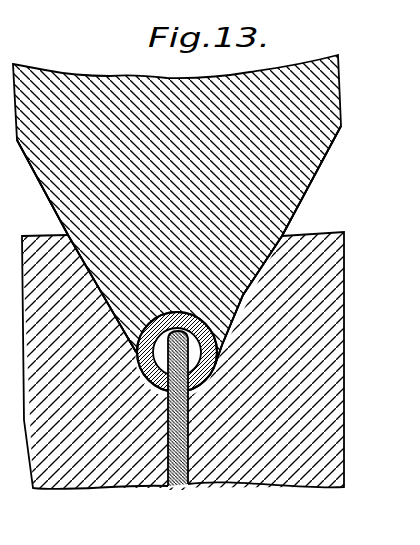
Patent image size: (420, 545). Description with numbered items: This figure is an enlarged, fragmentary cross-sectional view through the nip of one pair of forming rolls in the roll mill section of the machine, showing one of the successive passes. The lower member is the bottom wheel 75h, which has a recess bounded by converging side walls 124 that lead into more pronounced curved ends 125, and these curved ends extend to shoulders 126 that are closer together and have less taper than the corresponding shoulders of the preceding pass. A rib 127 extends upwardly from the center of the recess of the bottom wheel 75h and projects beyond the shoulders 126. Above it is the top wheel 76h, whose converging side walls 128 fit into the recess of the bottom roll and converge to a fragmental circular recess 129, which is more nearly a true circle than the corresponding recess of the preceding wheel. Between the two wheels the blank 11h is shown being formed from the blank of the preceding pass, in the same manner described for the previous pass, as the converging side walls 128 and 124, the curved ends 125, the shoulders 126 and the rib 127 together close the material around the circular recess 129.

The upper block (wedge member) 76h is at (61, 95).
The bottom wheel 75h is at (94, 468).
The converging side walls 128 is at (52, 206).
The converging side walls 124 is at (126, 338).
The blank 11h is at (176, 313).
The fragmental circular recess 129 is at (153, 318).
The rib 127 is at (198, 317).
The curved ends 125 is at (154, 389).
The shoulders 126 is at (190, 422).